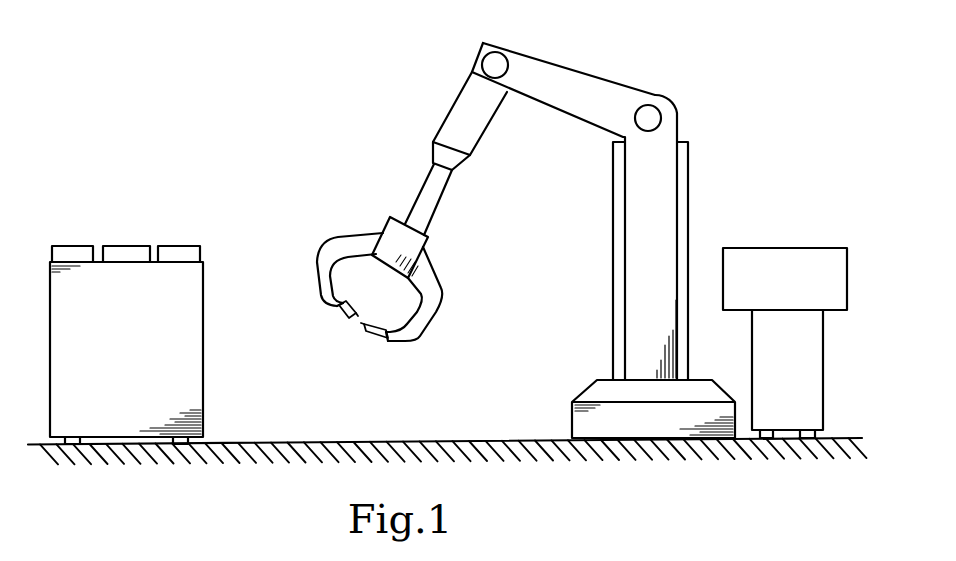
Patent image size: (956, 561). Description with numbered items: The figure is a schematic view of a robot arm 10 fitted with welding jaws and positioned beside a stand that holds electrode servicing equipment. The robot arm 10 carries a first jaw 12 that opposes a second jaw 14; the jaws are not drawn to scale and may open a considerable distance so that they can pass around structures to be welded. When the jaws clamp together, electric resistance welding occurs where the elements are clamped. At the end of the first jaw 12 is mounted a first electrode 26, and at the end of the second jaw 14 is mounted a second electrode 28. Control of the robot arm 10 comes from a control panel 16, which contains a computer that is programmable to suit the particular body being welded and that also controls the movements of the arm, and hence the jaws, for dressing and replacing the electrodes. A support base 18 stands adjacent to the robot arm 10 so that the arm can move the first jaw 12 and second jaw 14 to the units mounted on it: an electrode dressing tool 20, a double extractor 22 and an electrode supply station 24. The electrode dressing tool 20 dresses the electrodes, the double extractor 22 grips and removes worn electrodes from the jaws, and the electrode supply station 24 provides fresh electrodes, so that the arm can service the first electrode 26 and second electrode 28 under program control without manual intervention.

The robot arm 10 is at (587, 80).
The first jaw 12 is at (325, 270).
The second jaw 14 is at (425, 313).
The control panel 16 is at (787, 258).
The support base 18 is at (197, 393).
The electrode dressing tool 20 is at (65, 246).
The double extractor 22 is at (125, 246).
The electrode supply station 24 is at (175, 246).
The first electrode 26 is at (336, 307).
The second electrode 28 is at (373, 334).